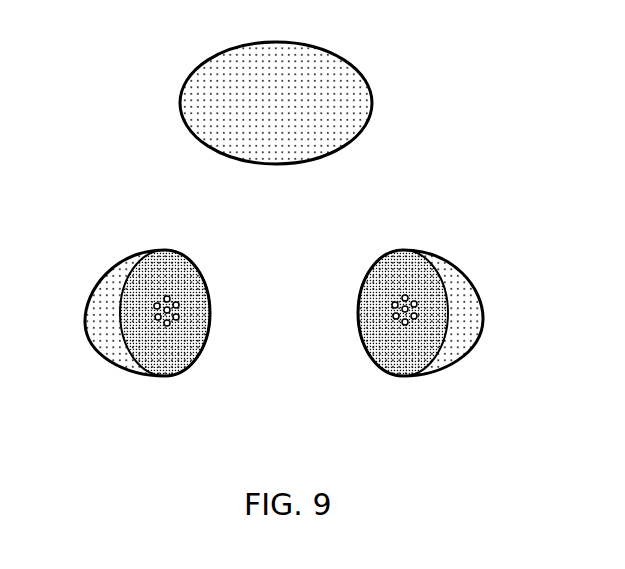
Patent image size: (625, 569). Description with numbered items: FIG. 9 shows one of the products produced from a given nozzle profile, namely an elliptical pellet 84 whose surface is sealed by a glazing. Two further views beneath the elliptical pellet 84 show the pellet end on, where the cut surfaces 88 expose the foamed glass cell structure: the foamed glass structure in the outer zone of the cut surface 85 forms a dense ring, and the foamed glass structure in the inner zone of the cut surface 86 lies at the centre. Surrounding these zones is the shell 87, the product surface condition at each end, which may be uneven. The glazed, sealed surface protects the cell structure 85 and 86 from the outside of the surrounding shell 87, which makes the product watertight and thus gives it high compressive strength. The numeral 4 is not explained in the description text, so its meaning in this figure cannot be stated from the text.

The absorbent article 4 is at (85, 328).
The elliptical pellet 84 is at (212, 53).
The foamed glass structure in outer zone of cut surface 85 is at (160, 277).
The foamed glass structure in inner zone of cut surface 86 is at (168, 326).
The product surface condition at each end 87 is at (470, 310).
The cut surfaces 88 is at (160, 371).